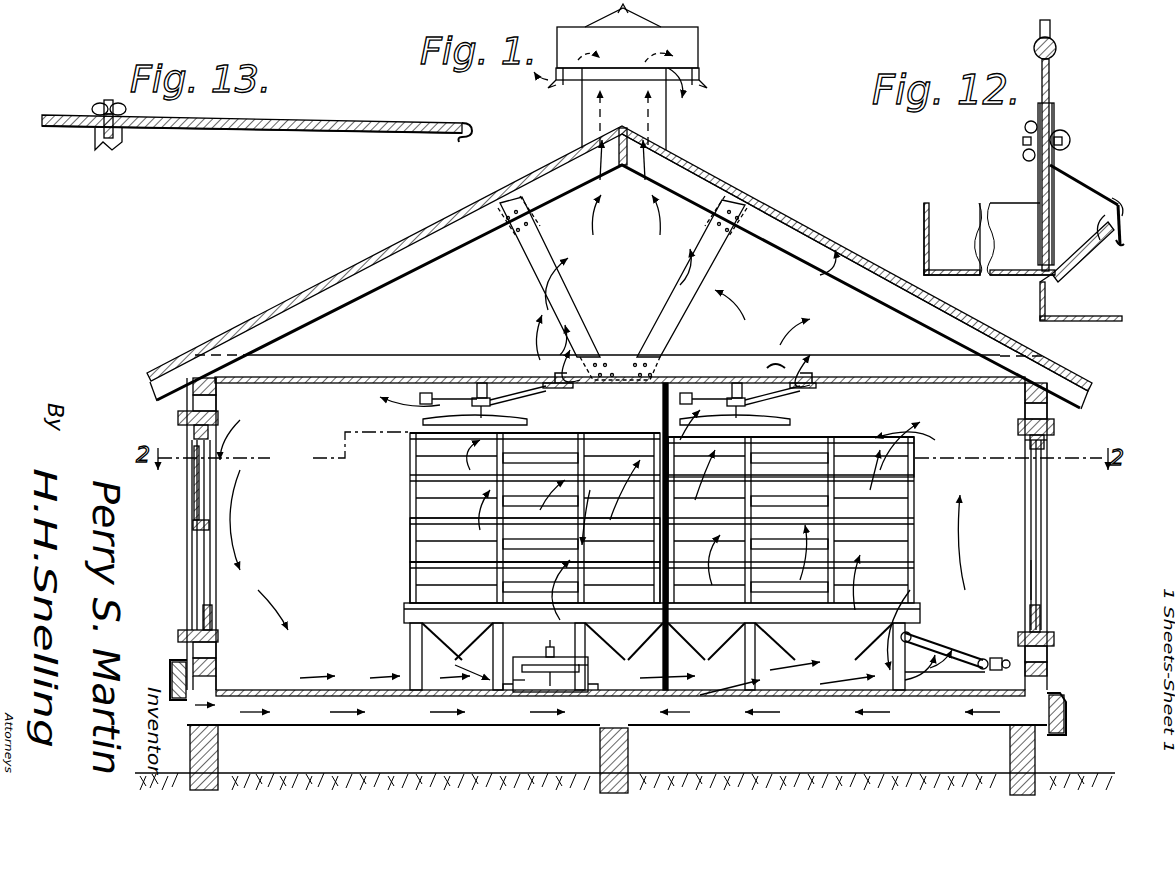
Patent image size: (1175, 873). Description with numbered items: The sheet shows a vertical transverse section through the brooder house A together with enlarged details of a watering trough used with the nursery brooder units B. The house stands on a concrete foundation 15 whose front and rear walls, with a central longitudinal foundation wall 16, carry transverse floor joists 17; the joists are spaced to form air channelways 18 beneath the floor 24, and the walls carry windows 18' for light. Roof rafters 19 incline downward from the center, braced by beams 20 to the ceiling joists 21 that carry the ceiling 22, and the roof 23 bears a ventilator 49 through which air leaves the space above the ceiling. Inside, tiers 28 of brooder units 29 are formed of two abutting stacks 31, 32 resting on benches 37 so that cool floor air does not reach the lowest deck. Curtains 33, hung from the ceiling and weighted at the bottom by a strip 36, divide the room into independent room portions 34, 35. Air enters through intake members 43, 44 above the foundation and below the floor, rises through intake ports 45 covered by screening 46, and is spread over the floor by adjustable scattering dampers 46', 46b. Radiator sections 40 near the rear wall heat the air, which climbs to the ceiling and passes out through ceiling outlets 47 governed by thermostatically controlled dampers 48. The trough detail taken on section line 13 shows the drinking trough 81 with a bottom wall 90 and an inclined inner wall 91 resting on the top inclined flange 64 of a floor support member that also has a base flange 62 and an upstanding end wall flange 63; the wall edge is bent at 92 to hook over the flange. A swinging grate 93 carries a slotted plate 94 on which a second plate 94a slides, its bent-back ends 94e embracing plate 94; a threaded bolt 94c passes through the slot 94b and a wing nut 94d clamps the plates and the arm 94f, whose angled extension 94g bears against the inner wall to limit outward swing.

In FIG. 1, the foundation 15 is at (200, 748).
In FIG. 1, the central foundation wall 16 is at (626, 760).
In FIG. 1, the floor joists 17 is at (790, 726).
In FIG. 1, the air channelways 18 is at (393, 731).
In FIG. 1, the windows 18' is at (638, 534).
In FIG. 1, the roof rafters 19 is at (432, 268).
In FIG. 1, the beams 20 is at (714, 262).
In FIG. 1, the ceiling joists 21 is at (440, 357).
In FIG. 1, the ceiling 22 is at (348, 378).
In FIG. 1, the roof 23 is at (458, 212).
In FIG. 1, the floor 24 is at (316, 690).
In FIG. 1, the tiers 28 is at (416, 583).
In FIG. 1, the brooder units 29 is at (422, 516).
In FIG. 1, the stack of brooder units 31 is at (420, 465).
In FIG. 1, the stack of brooder units 32 is at (915, 464).
In FIG. 1, the curtains 33 is at (662, 408).
In FIG. 1, the room portion 34 is at (262, 468).
In FIG. 1, the room portion 35 is at (985, 585).
In FIG. 1, the weight strip 36 is at (670, 660).
In FIG. 1, the benches 37 is at (406, 612).
In FIG. 1, the radiator sections 40 is at (956, 644).
In FIG. 1, the air intake member 43 is at (170, 658).
In FIG. 1, the air intake member 44 is at (1046, 699).
In FIG. 1, the air intake ports 45 is at (580, 672).
In FIG. 1, the screening 46 is at (550, 694).
In FIG. 1, the adjustable scattering damper 46' is at (497, 665).
In FIG. 1, the adjustable scattering damper 46b is at (546, 654).
In FIG. 1, the air outlets 47 is at (565, 362).
In FIG. 1, the thermostatically controlled dampers 48 is at (462, 401).
In FIG. 1, the ventilator 49 is at (660, 124).
In FIG. 1, the brooder house A is at (825, 258).
In FIG. 1, the nursery brooder units B is at (402, 555).
In FIG. 12, the section line 13- 13 is at (1048, 143).
In FIG. 12, the base flange 62 is at (1070, 324).
In FIG. 12, the end wall flange 63 is at (1040, 312).
In FIG. 12, the top inclined flange 64 is at (1071, 282).
In FIG. 12, the watering trough 81 is at (940, 210).
In FIG. 12, the bottom wall 90 is at (1006, 275).
In FIG. 12, the inner wall 91 is at (1116, 200).
In FIG. 12, the bent forward edge 92 is at (1106, 252).
In FIG. 12, the swinging grate 93 is at (1058, 30).
In FIG. 12, the plate 94 is at (1054, 72).
In FIG. 13, the plate 94 is at (332, 120).
In FIG. 12, the plate 94a is at (1045, 200).
In FIG. 13, the plate 94a is at (332, 134).
In FIG. 12, the slot 94b is at (1062, 150).
In FIG. 12, the threaded bolt 94c is at (1021, 158).
In FIG. 13, the threaded bolt 94c is at (108, 155).
In FIG. 12, the wing nut 94d is at (1023, 128).
In FIG. 13, the wing nut 94d is at (94, 102).
In FIG. 12, the bent-back ends 94e is at (1046, 233).
In FIG. 13, the bent-back ends 94e is at (470, 136).
In FIG. 12, the arm 94f is at (1122, 206).
In FIG. 12, the angled extension 94g is at (1123, 240).